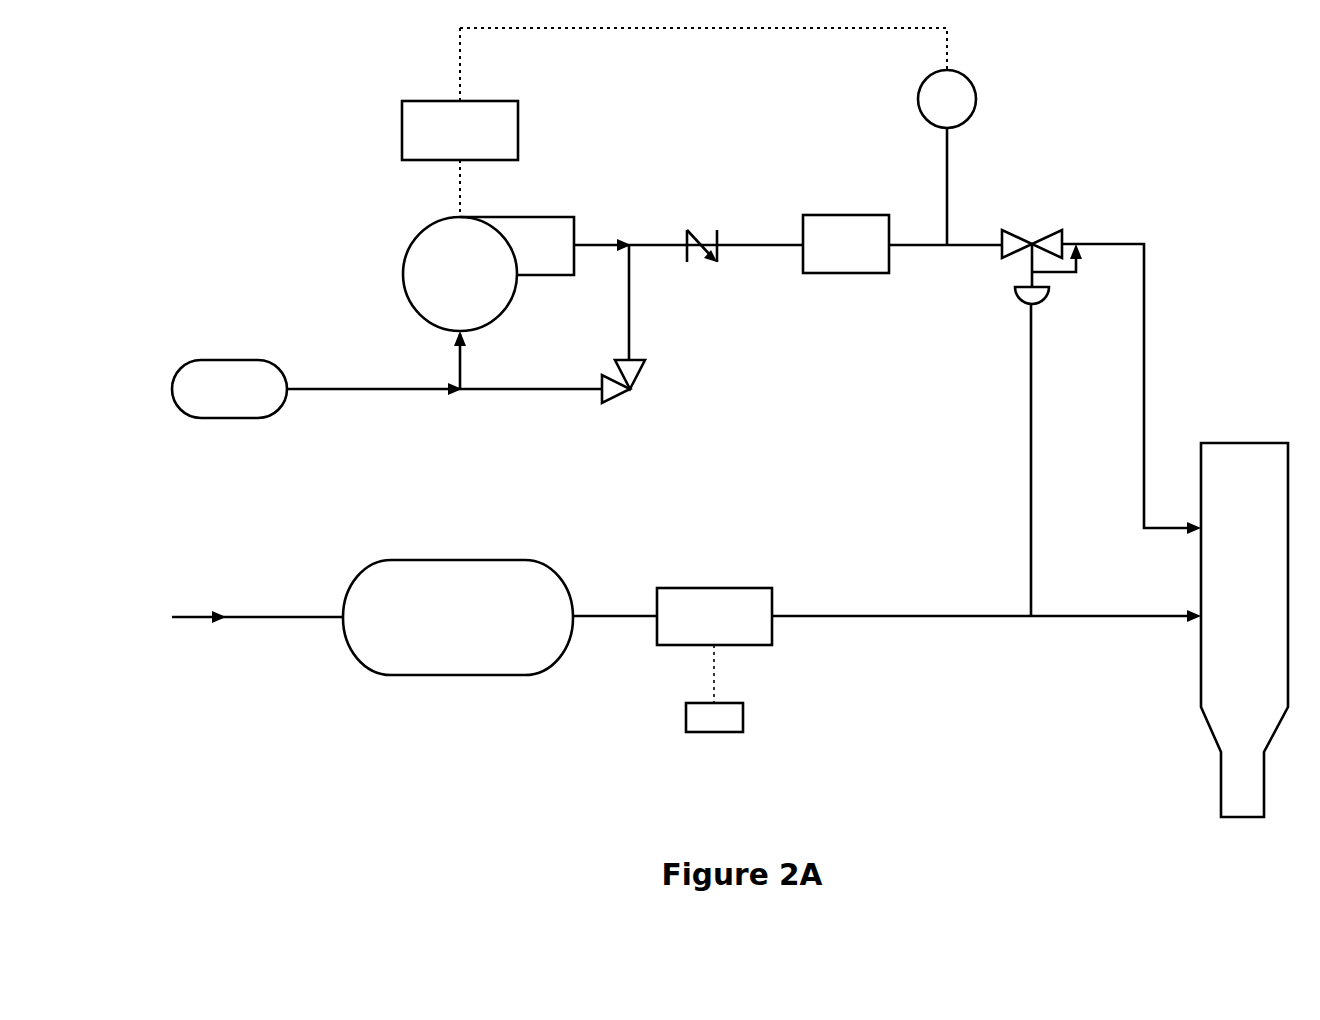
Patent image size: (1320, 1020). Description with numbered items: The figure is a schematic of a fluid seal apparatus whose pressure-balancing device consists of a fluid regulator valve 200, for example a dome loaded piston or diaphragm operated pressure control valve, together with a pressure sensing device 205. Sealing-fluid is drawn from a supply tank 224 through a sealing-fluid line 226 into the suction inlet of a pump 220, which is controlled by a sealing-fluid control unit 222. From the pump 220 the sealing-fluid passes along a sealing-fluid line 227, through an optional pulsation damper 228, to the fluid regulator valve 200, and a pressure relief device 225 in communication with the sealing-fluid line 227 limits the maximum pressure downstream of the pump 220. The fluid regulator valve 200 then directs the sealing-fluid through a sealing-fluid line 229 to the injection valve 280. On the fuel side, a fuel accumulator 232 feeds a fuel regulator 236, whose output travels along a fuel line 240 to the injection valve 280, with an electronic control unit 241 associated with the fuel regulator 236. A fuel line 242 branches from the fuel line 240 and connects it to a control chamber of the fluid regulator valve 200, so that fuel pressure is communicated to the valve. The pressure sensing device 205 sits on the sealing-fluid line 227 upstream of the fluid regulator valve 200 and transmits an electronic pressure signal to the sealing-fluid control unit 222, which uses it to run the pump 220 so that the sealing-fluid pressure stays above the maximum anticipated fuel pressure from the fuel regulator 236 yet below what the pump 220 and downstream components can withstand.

The fluid regulator valve 200 is at (1012, 230).
The pressure sensing device 205 is at (947, 99).
The pump 220 is at (438, 287).
The sealing-fluid control unit 222 is at (438, 143).
The supply tank 224 is at (208, 403).
The pressure relief device 225 is at (612, 389).
The sealing-fluid line 226 is at (372, 389).
The sealing-fluid line 227 is at (745, 245).
The pulsation damper 228 is at (824, 257).
The sealing-fluid line 229 is at (1144, 297).
The fuel accumulator 232 is at (436, 630).
The fuel regulator 236 is at (692, 629).
The fuel line 240 is at (973, 616).
The electronic control unit 241 is at (743, 714).
The fuel line 242 is at (1030, 438).
The injection valve 280 is at (1221, 639).